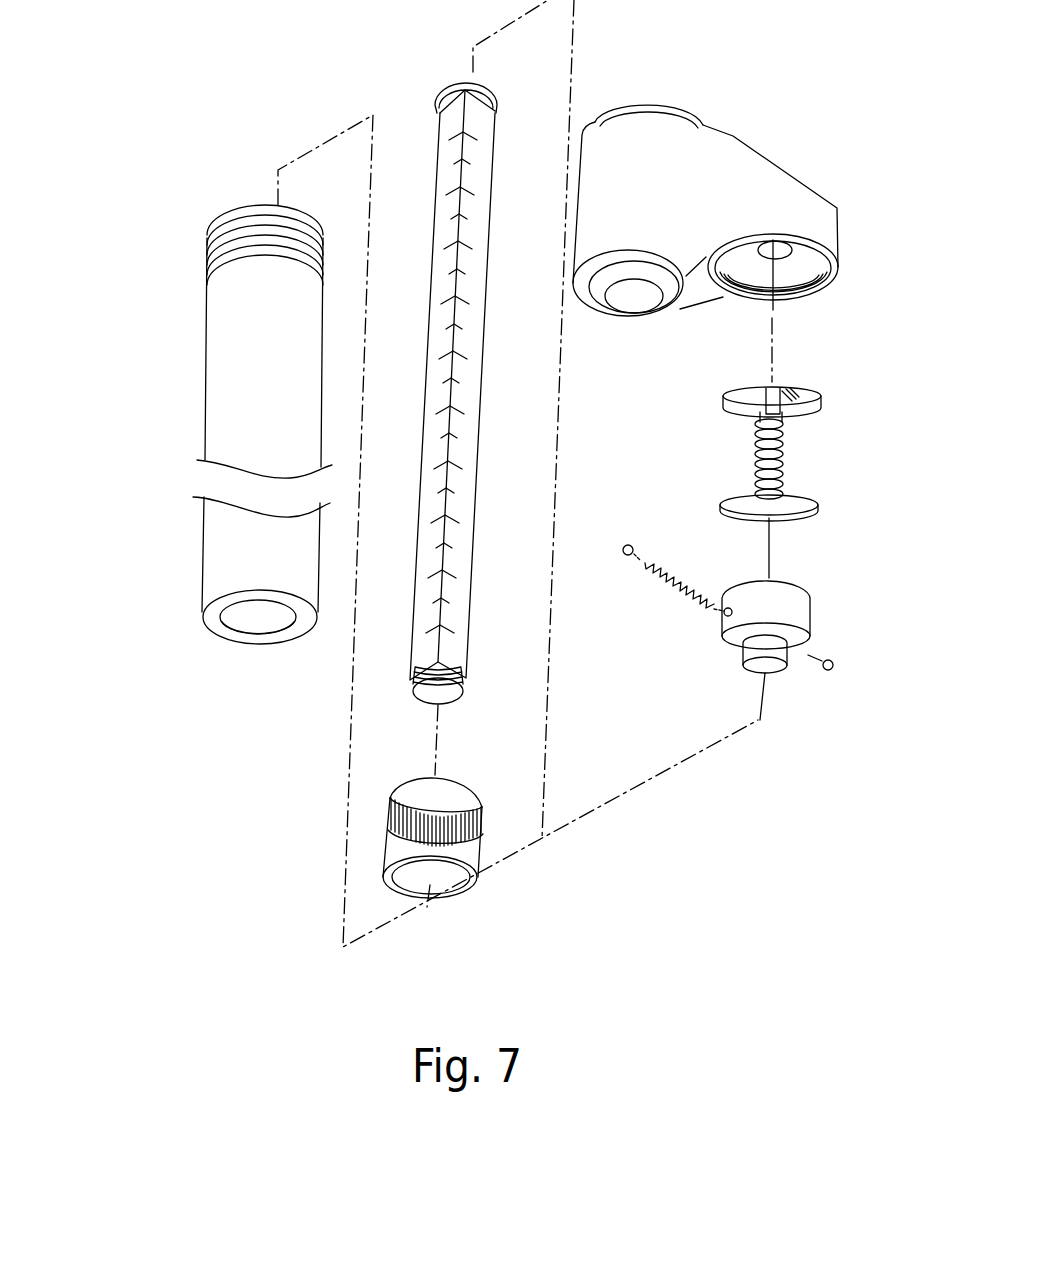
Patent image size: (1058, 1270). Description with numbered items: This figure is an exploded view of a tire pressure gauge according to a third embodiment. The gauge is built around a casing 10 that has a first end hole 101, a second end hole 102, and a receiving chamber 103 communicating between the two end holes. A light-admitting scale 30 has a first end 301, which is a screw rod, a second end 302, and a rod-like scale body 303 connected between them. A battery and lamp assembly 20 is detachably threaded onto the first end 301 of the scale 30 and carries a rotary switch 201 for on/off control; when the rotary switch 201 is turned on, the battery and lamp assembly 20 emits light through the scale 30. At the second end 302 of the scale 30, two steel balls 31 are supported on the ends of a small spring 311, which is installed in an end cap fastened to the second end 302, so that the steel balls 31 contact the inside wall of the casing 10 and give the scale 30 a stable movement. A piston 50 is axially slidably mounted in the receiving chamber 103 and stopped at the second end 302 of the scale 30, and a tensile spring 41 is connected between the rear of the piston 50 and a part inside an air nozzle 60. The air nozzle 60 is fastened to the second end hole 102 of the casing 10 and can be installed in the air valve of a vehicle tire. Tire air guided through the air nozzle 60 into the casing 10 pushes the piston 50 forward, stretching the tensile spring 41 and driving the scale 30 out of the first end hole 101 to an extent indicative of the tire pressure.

The casing 10 is at (197, 470).
The first end hole 101 is at (243, 615).
The second end hole 102 is at (227, 210).
The receiving chamber 103 is at (277, 615).
The battery and lamp assembly 20 is at (470, 834).
The rotary switch 201 is at (480, 837).
The scale 30 is at (478, 397).
The first end 301 is at (448, 693).
The second end 302 is at (487, 80).
The rod-like scale body 303 is at (478, 448).
The steel balls 31 is at (817, 705).
The small spring 311 is at (670, 588).
The tensile spring 41 is at (783, 457).
The piston 50 is at (815, 505).
The air nozzle 60 is at (659, 82).